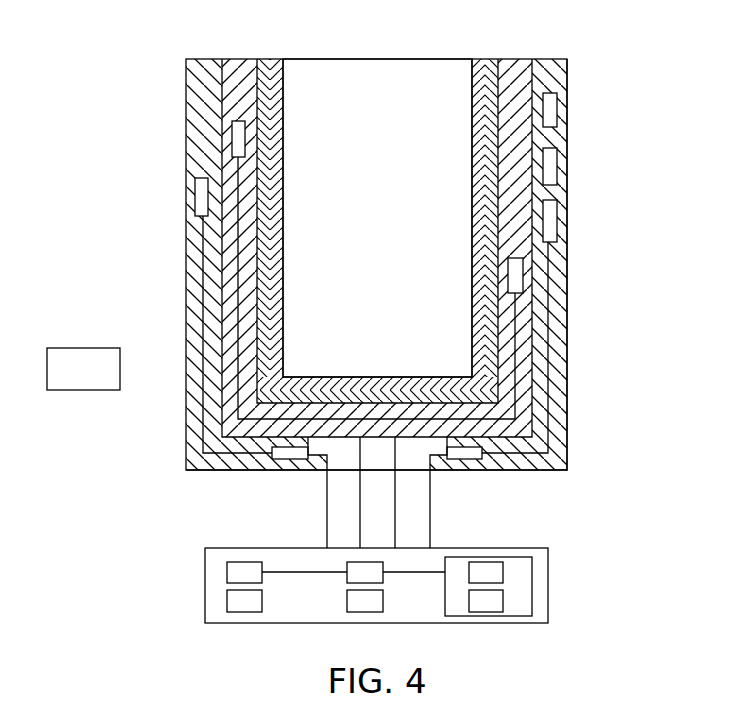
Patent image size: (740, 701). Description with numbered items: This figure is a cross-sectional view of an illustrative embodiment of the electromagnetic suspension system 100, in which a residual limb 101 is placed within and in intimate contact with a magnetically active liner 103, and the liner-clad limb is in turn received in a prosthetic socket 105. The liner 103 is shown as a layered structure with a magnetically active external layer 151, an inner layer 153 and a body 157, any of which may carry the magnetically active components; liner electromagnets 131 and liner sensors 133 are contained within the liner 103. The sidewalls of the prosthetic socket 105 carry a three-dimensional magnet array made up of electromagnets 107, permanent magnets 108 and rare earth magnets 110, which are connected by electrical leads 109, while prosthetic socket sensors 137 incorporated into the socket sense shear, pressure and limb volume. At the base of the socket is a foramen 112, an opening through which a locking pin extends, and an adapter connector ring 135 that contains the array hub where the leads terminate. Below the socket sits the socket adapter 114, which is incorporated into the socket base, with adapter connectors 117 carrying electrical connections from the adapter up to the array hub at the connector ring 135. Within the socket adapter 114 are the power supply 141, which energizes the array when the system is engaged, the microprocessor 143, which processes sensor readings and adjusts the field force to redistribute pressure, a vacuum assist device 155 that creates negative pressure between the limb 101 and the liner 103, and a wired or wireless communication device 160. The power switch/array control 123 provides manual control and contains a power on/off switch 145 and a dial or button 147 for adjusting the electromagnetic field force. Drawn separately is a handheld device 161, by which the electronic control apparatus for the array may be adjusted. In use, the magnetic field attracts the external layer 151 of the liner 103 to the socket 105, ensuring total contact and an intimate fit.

The electromagnetic suspension system 100 is at (121, 103).
The residual limb 101 is at (357, 237).
The liner 103 is at (283, 308).
The prosthetic socket 105 is at (203, 59).
The electromagnets 107 is at (557, 227).
The permanent magnets 108 is at (557, 166).
The electrical leads 109 is at (567, 328).
The rare earth magnets 110 is at (557, 105).
The foramen 112 is at (342, 455).
The socket adapter 114 is at (548, 560).
The adapter connectors 117 is at (432, 525).
The power switch/array control 123 is at (532, 590).
The liner electromagnets 131 is at (232, 150).
The liner sensors 133 is at (523, 276).
The adapter connector ring 135 is at (300, 459).
The prosthetic socket sensors 137 is at (195, 199).
The power supply 141 is at (227, 570).
The microprocessor 143 is at (347, 578).
The power on/off switch 145 is at (503, 572).
The dial or button 147 is at (495, 612).
The magnetically active external layer 151 is at (515, 59).
The inner layer 153 is at (283, 140).
The vacuum assist device 155 is at (227, 600).
The body 157 is at (263, 59).
The wired or wireless communication device 160 is at (347, 610).
The handheld device 161 is at (70, 378).